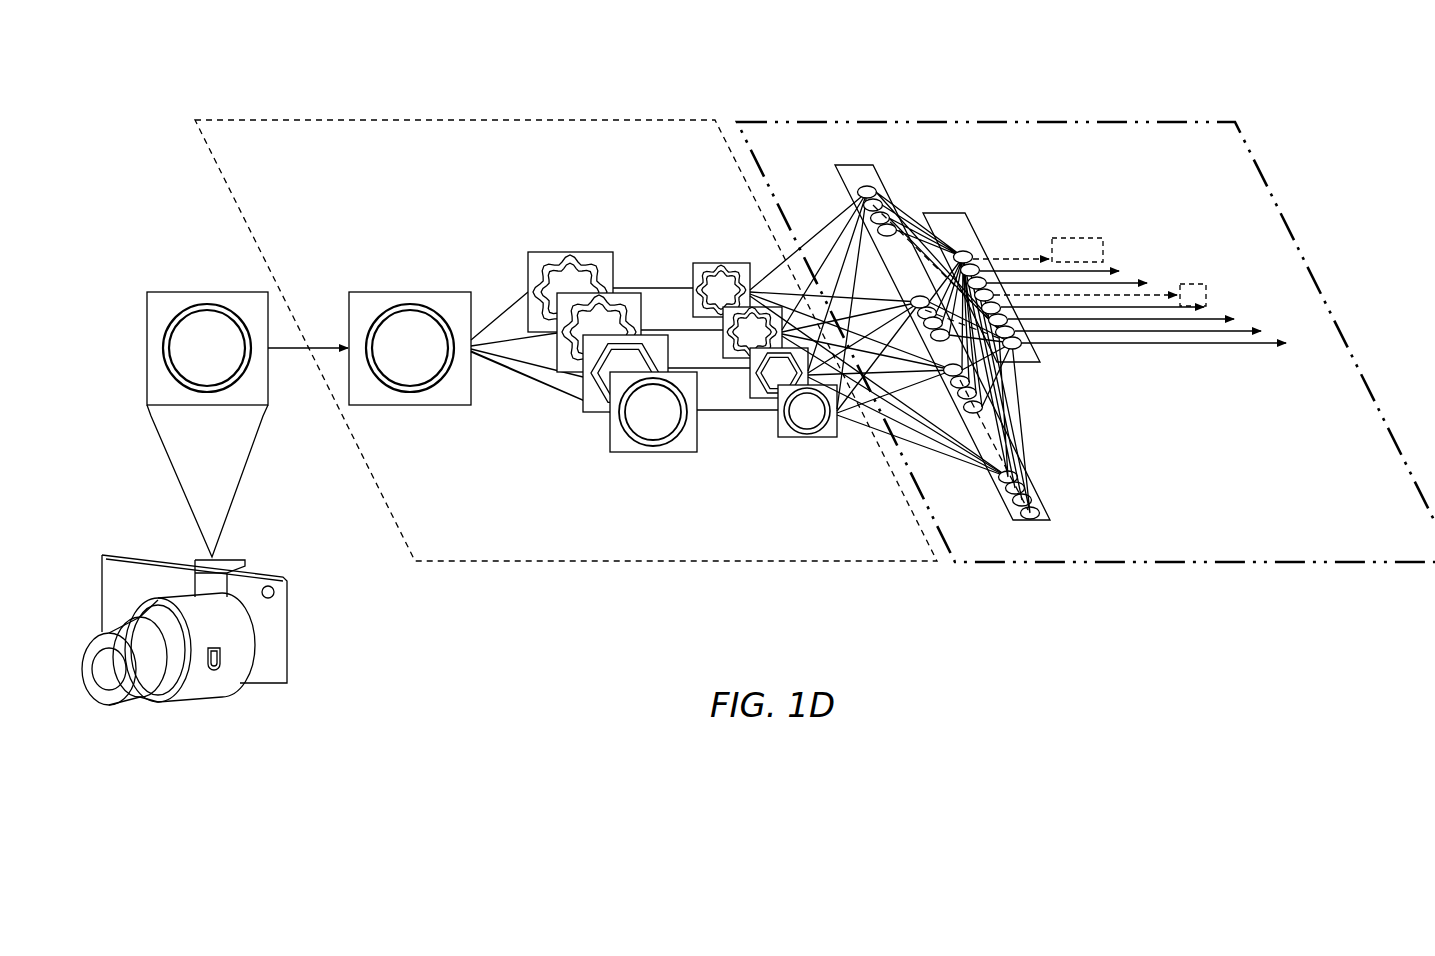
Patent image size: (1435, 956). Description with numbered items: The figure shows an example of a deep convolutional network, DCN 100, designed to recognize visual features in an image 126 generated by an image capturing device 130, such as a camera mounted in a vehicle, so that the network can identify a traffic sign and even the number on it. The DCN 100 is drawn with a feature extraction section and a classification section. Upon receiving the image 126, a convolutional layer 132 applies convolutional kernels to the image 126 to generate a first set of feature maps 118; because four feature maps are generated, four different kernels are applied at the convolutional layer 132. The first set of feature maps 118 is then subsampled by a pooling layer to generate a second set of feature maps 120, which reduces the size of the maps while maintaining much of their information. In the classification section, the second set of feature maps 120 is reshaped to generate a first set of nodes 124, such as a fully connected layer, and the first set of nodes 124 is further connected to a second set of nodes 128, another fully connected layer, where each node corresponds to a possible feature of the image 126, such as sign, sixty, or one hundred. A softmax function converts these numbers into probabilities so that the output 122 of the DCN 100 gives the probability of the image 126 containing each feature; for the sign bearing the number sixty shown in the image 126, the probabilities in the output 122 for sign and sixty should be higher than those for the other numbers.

The DCN 100 is at (208, 70).
The first set of feature maps 118 is at (562, 245).
The second set of feature maps 120 is at (718, 258).
The output 122 is at (944, 183).
The first set of nodes 124 is at (852, 163).
The image 126 is at (182, 292).
The second set of nodes 128 is at (1033, 352).
The image capturing device 130 is at (146, 555).
The convolutional layer 132 is at (384, 292).